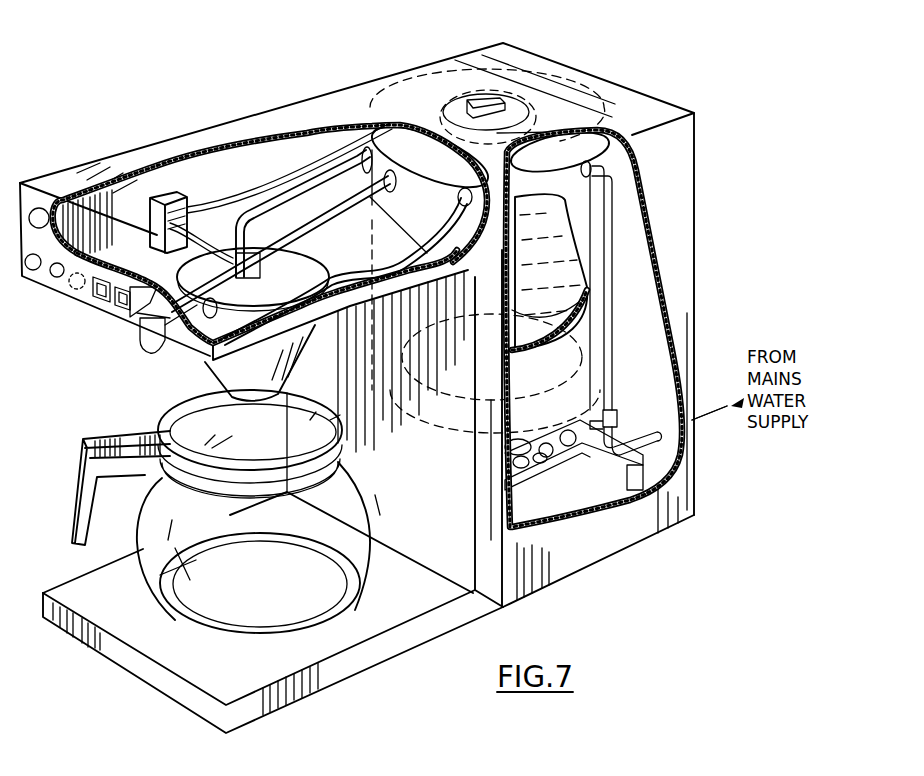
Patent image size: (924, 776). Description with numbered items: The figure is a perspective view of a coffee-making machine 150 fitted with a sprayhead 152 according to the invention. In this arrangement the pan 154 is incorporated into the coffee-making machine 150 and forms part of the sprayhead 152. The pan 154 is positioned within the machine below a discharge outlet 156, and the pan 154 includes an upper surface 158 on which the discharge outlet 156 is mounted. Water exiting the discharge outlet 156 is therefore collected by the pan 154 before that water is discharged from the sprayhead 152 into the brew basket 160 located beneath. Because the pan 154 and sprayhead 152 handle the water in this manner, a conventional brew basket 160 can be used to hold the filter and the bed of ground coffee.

The coffee-making machine 150 is at (708, 127).
The sprayhead 152 is at (134, 257).
The pan 154 is at (300, 264).
The discharge outlet 156 is at (289, 253).
The upper surface 158 is at (220, 284).
The brew basket 160 is at (212, 372).